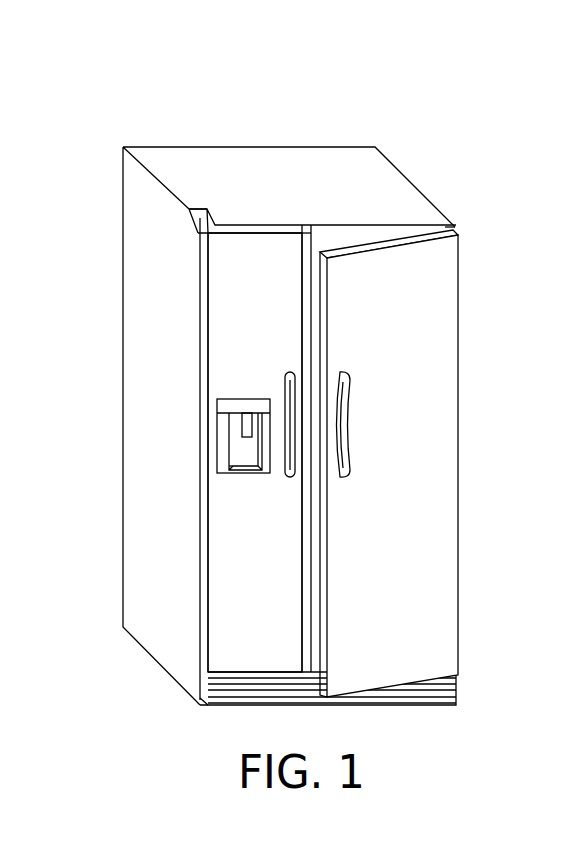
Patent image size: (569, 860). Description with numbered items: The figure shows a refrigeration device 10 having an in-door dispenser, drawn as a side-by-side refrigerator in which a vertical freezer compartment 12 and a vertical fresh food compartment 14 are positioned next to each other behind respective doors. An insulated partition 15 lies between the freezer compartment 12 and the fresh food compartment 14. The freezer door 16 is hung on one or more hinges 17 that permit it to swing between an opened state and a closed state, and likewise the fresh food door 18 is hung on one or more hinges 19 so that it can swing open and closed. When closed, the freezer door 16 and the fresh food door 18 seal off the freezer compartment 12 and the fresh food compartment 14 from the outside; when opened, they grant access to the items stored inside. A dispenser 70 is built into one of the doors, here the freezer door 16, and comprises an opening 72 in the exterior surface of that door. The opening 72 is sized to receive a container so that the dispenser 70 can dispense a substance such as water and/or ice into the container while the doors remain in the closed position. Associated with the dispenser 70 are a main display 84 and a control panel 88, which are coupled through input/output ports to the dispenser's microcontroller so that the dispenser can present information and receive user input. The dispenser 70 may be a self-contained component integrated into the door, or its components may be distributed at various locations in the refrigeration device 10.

The refrigeration device 10 is at (427, 68).
The freezer compartment 12 is at (237, 578).
The fresh food compartment 14 is at (390, 500).
The insulated partition 15 is at (310, 245).
The freezer door 16 is at (230, 652).
The hinge 17 is at (205, 218).
The fresh food door 18 is at (440, 430).
The hinge 19 is at (442, 227).
The dispenser 70 is at (237, 500).
The opening 72 is at (252, 455).
The main display 84 is at (247, 398).
The control panel 88 is at (217, 462).